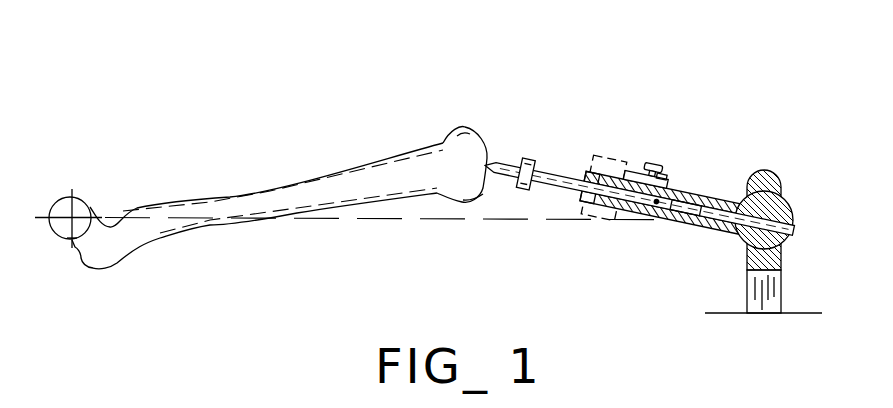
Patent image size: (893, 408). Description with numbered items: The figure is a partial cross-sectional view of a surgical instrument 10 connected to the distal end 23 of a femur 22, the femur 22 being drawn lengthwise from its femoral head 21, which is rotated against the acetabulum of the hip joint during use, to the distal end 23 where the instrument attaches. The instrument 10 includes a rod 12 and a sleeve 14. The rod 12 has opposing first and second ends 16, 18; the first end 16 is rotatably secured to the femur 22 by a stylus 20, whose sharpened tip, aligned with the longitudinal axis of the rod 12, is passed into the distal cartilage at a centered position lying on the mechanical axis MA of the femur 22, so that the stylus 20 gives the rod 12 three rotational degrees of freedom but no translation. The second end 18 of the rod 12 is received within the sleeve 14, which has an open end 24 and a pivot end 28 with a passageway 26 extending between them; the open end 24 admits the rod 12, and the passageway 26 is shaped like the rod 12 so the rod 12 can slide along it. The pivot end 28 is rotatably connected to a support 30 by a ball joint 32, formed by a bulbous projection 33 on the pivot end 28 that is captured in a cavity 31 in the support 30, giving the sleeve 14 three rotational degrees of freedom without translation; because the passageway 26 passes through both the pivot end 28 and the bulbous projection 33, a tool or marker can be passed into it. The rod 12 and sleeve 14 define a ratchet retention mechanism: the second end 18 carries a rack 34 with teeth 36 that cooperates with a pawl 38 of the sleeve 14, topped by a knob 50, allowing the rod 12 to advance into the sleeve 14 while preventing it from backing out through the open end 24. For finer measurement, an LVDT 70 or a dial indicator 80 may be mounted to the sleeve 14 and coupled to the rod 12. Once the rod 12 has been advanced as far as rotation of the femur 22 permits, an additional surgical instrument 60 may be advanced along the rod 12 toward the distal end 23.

The instrument 10 is at (664, 169).
The rod 12 is at (639, 198).
The sleeve 14 is at (687, 208).
The first end 16 is at (486, 178).
The second end 18 is at (685, 208).
The stylus 20 is at (383, 177).
The femoral head 21 is at (72, 217).
The femur 22 is at (181, 188).
The distal end 23 is at (462, 155).
The open end 24 is at (590, 187).
The passageway 26 is at (784, 200).
The pivot end 28 is at (745, 238).
The support 30 is at (772, 290).
The cavity 31 is at (790, 227).
The ball joint 32 is at (795, 245).
The bulbous projection 33 is at (765, 195).
The rack 34 is at (656, 201).
The teeth 36 is at (645, 179).
The pawl 38 is at (661, 176).
The knob 50 is at (653, 169).
The surgical instrument 60 is at (525, 174).
The LVDT 70 is at (583, 212).
The dial indicator 80 is at (607, 250).
The mechanical axis MA is at (242, 198).